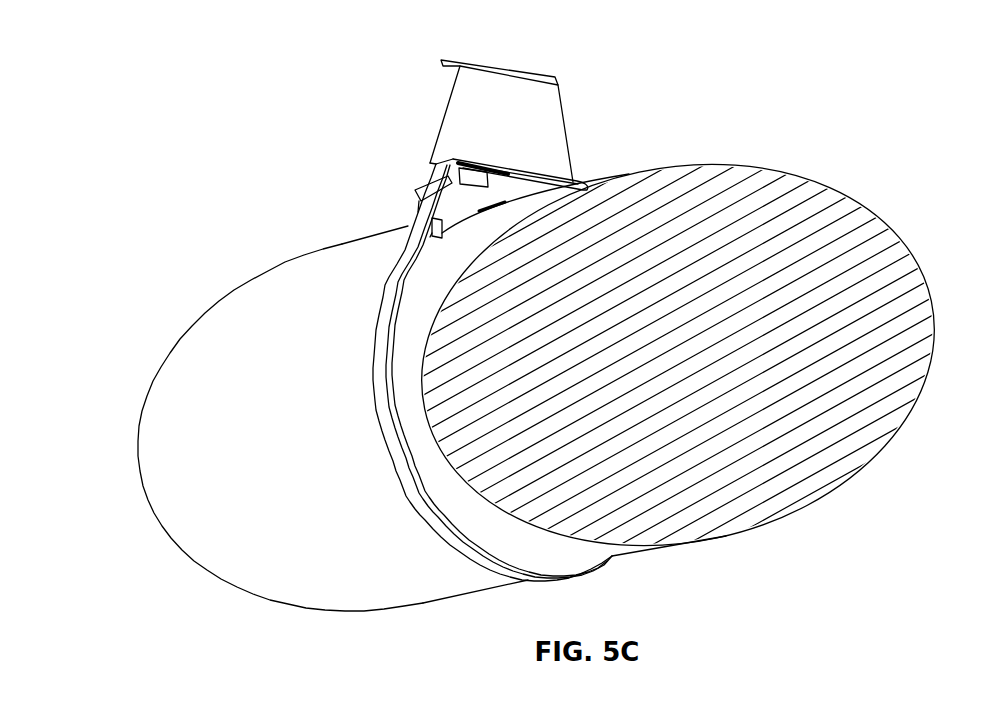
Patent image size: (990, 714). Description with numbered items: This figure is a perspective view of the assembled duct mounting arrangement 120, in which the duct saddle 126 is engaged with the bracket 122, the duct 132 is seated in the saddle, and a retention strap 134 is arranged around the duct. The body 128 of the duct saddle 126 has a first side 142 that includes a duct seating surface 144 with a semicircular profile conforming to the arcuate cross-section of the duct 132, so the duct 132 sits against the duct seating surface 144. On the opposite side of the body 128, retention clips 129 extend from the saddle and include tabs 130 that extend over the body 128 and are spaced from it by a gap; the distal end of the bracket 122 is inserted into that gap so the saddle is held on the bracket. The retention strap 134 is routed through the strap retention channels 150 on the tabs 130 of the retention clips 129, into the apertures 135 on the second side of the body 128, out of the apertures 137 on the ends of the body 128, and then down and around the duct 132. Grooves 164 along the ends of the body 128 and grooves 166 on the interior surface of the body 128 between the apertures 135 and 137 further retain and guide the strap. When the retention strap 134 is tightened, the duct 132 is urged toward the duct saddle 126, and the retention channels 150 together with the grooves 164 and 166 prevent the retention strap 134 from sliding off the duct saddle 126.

The clamp assembly 120 is at (663, 106).
The bracket 122 is at (569, 73).
The duct saddle 126 is at (398, 177).
The body 128 is at (542, 177).
The retention clips 129 is at (513, 167).
The tabs 130 is at (497, 152).
The duct 132 is at (393, 590).
The retention strap 134 is at (503, 195).
The apertures 135 is at (430, 163).
The apertures 137 is at (419, 207).
The first side 142 is at (493, 211).
The duct seating surface 144 is at (448, 226).
The strap retention channels 150 is at (452, 151).
The grooves 164 is at (430, 237).
The grooves 166 is at (420, 197).